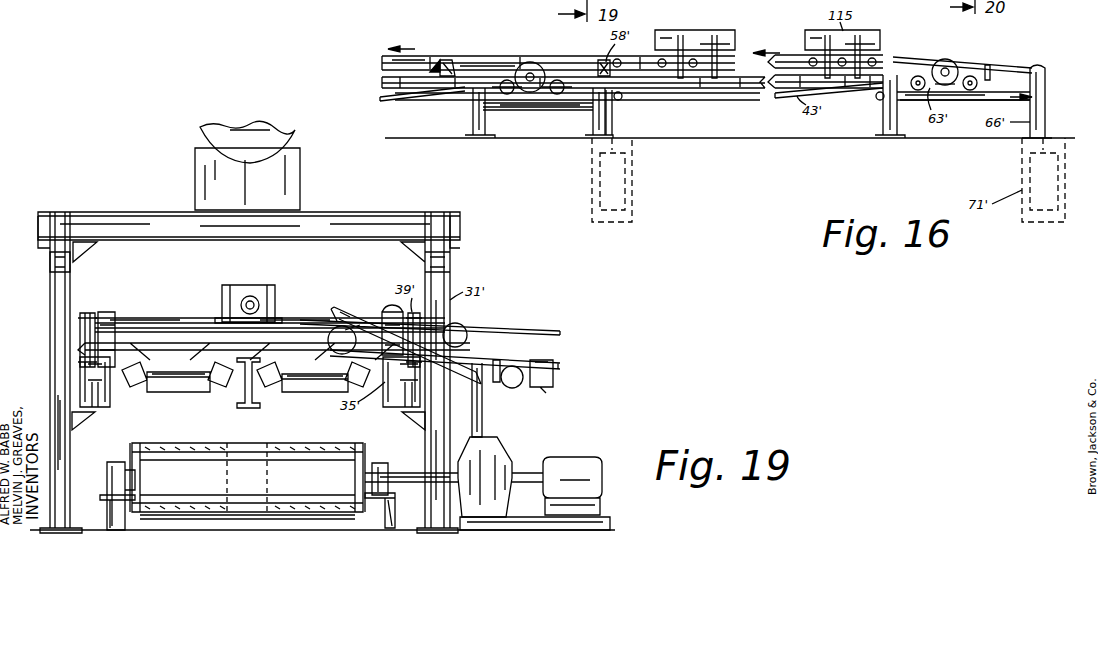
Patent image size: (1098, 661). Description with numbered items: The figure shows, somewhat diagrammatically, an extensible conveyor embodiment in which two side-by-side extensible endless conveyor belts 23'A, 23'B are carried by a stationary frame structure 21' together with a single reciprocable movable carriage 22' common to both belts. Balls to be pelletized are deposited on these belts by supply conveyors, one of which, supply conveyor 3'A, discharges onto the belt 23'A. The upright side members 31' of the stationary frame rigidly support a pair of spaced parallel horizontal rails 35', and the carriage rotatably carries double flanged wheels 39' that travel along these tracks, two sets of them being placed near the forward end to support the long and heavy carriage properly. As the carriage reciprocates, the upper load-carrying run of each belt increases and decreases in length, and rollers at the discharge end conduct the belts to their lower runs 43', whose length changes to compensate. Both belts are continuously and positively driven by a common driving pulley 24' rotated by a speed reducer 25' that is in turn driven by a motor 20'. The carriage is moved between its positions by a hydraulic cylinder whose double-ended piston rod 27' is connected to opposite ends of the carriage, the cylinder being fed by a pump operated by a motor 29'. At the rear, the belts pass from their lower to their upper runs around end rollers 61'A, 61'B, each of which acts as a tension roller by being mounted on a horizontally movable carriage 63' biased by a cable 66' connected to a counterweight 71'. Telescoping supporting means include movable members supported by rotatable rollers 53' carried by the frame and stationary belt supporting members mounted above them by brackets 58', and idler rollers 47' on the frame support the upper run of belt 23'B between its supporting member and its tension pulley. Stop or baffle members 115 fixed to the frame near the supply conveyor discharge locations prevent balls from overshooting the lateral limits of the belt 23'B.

In FIG. 16, the stationary frame structure 21' is at (552, 72).
In FIG. 19, the stationary frame structure 21' is at (249, 208).
In FIG. 16, the rotatable rollers 53' is at (430, 50).
In FIG. 16, the brackets 58' is at (466, 53).
In FIG. 16, the end roller 61'A is at (552, 62).
In FIG. 16, the end roller 61'B is at (972, 64).
In FIG. 16, the horizontally movable carriage 63' is at (532, 102).
In FIG. 16, the lower runs 43' is at (422, 106).
In FIG. 19, the lower runs 43' is at (247, 527).
In FIG. 16, the cable 66' is at (631, 112).
In FIG. 16, the counterweight 71' is at (633, 180).
In FIG. 16, the stop or baffle members 115 is at (694, 30).
In FIG. 16, the idler rollers 47' is at (815, 71).
In FIG. 16, the extensible endless conveyor belt 23'B is at (962, 65).
In FIG. 19, the extensible endless conveyor belt 23'B is at (177, 371).
In FIG. 19, the extensible endless conveyor belt 23'A is at (313, 371).
In FIG. 19, the motor 29' is at (247, 148).
In FIG. 19, the upright side members 31' is at (54, 372).
In FIG. 19, the double-ended piston rod 27' is at (263, 301).
In FIG. 19, the reciprocable movable carriage 22' is at (270, 310).
In FIG. 19, the double flanged wheels 39' is at (96, 322).
In FIG. 19, the rails 35' is at (105, 393).
In FIG. 19, the supply conveyor 3'A is at (430, 342).
In FIG. 19, the common driving pulley 24' is at (247, 466).
In FIG. 19, the speed reducer 25' is at (498, 470).
In FIG. 19, the motor 20' is at (582, 471).